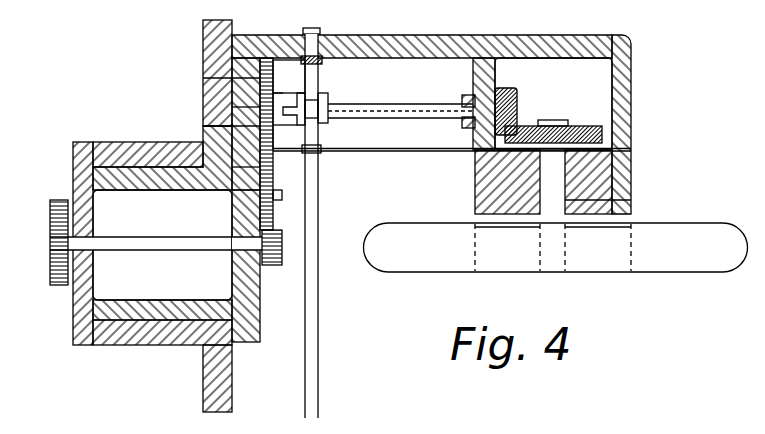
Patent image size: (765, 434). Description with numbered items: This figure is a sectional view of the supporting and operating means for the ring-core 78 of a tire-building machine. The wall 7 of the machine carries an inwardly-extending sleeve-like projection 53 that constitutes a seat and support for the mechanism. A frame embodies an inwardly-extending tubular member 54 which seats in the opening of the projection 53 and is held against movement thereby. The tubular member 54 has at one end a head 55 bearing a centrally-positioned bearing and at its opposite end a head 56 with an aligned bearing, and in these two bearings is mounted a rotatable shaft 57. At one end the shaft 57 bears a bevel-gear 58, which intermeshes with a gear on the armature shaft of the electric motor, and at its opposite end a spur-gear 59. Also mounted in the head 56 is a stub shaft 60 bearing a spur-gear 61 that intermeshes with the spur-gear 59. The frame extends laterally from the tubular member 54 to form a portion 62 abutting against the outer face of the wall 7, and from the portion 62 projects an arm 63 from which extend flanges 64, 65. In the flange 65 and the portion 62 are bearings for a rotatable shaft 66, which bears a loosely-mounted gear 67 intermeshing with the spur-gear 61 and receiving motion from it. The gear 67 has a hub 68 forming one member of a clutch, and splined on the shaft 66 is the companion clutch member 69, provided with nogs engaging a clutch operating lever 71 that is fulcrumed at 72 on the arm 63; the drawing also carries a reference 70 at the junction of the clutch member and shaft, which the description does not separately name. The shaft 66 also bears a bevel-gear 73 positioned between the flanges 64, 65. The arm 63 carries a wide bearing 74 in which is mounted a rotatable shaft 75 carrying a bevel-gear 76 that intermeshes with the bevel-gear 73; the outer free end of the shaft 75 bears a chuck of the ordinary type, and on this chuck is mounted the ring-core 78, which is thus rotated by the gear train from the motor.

The wall 7 is at (203, 48).
The sleeve-like projection 53 is at (147, 344).
The tubular member 54 is at (168, 182).
The head 55 is at (90, 278).
The head 56 is at (250, 287).
The rotatable shaft 57 is at (186, 244).
The bevel-gear 58 is at (55, 206).
The spur-gear 59 is at (282, 262).
The stub shaft 60 is at (243, 194).
The spur-gear 61 is at (315, 144).
The frame portion 62 is at (203, 126).
The arm 63 is at (452, 34).
The flange 64 is at (631, 107).
The flange 65 is at (496, 72).
The rotatable shaft 66 is at (418, 109).
The gear 67 is at (203, 78).
The hub 68 is at (283, 91).
The clutch member 69 is at (329, 98).
The coupling 70 is at (318, 114).
The clutch operating lever 71 is at (319, 205).
The fulcrum 72 is at (312, 57).
The bevel-gear 73 is at (517, 100).
The wide bearing 74 is at (623, 170).
The rotatable shaft 75 is at (632, 202).
The bevel-gear 76 is at (594, 122).
The ring-core 78 is at (556, 247).